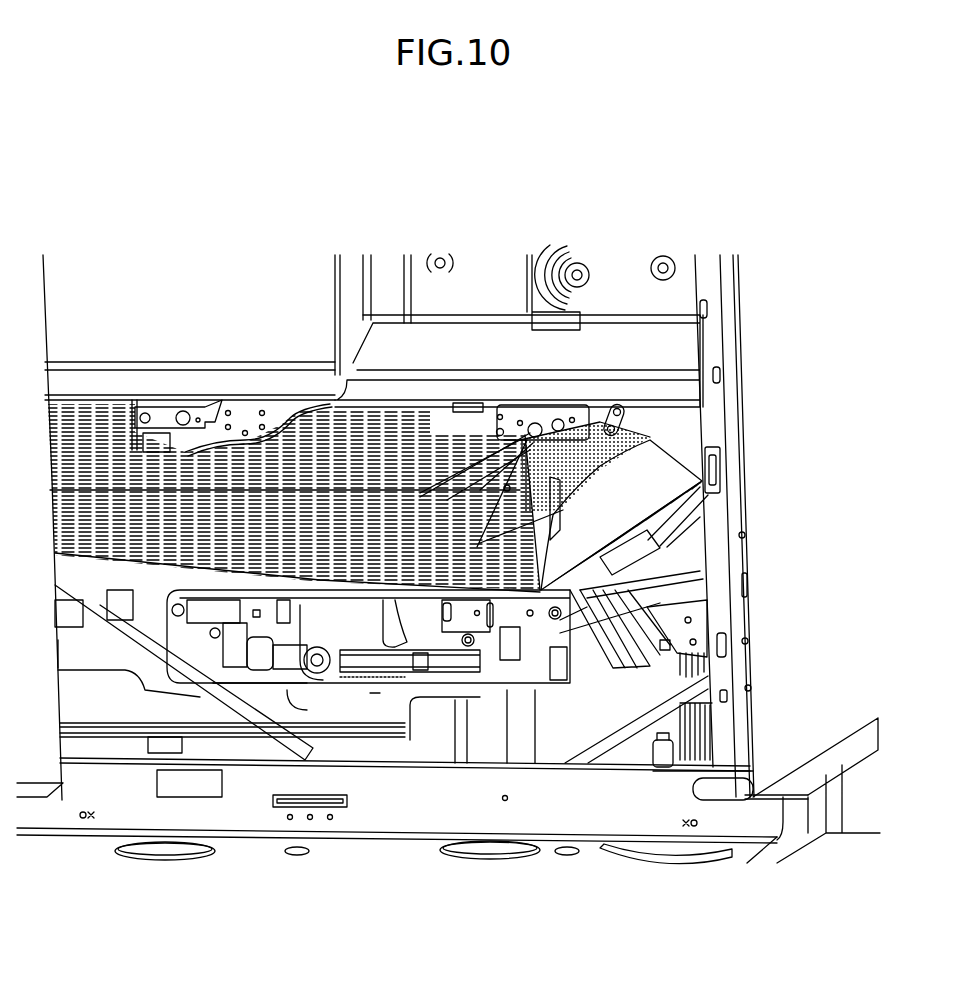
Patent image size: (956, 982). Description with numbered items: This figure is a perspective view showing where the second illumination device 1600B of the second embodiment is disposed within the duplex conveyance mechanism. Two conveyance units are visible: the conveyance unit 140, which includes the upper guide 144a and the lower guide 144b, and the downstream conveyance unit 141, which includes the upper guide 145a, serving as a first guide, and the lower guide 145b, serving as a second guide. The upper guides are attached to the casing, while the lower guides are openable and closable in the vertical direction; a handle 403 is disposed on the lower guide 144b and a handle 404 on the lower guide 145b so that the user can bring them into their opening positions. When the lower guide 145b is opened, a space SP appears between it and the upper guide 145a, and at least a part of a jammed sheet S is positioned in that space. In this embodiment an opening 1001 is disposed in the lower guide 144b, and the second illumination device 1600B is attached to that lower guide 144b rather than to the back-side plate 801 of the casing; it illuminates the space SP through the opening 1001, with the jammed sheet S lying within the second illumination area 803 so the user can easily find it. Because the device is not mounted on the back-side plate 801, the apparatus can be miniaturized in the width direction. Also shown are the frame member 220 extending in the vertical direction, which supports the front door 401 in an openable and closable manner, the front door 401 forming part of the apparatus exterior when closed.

The conveyance unit 140 is at (317, 368).
The upper guide 144a is at (220, 420).
The upper guide 145a is at (440, 433).
The back-side plate 801 is at (485, 470).
The space SP is at (598, 440).
The sheet S is at (688, 432).
The conveyance unit 141 is at (720, 440).
The second illumination area 803 is at (707, 487).
The lower guide 144b is at (123, 580).
The handle 403 is at (372, 670).
The opening 1001 is at (490, 590).
The second illumination device 1600B is at (530, 580).
The lower guide 145b is at (605, 635).
The handle 404 is at (651, 657).
The frame member 220 is at (727, 737).
The front door 401 is at (788, 708).